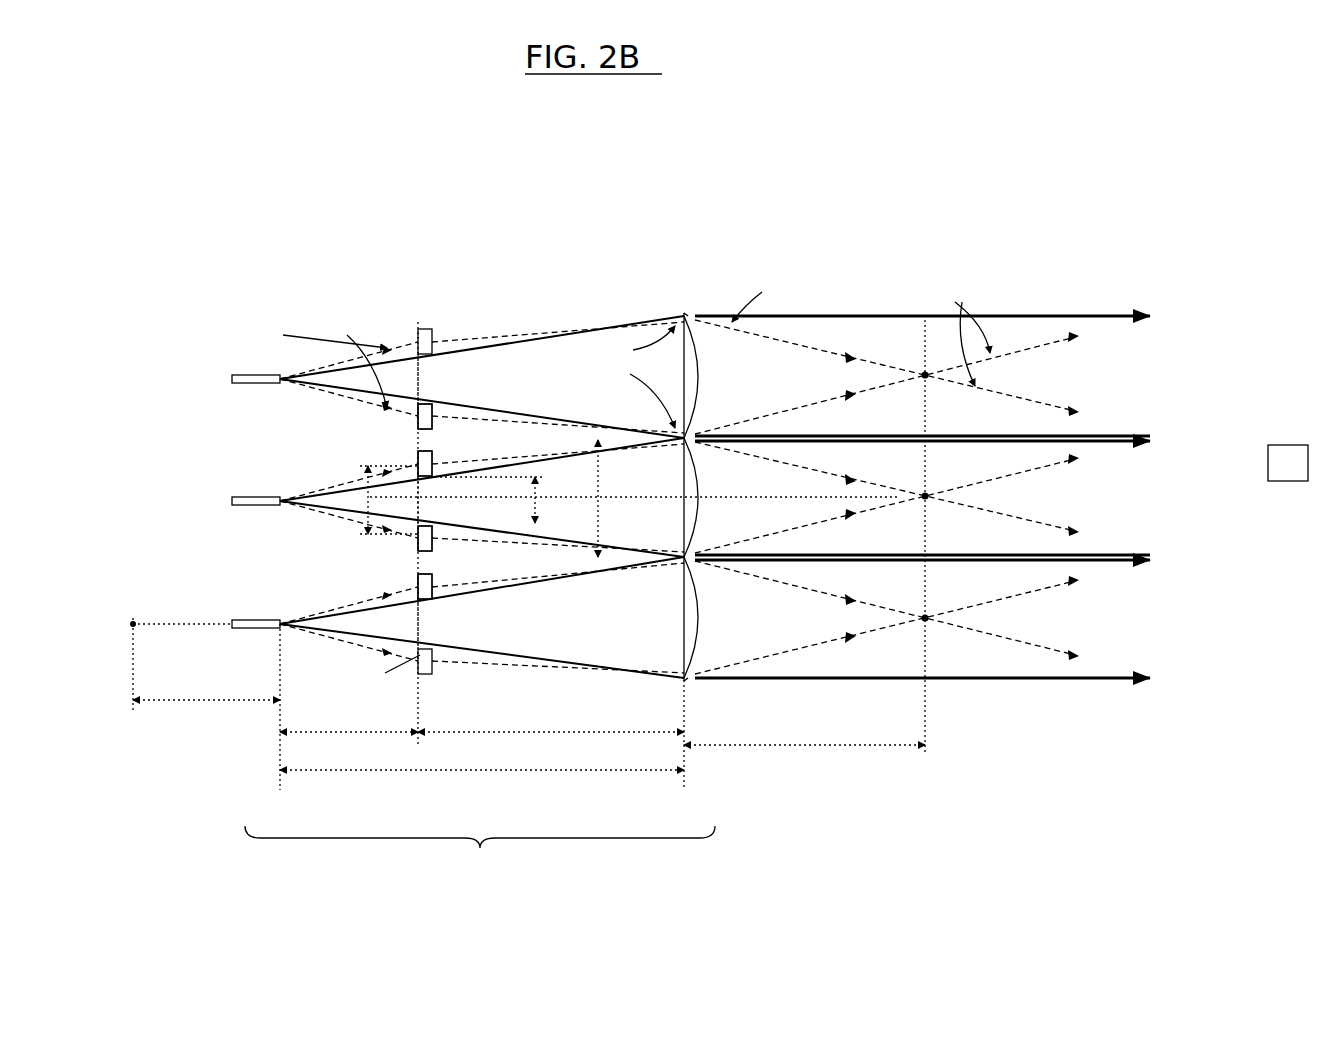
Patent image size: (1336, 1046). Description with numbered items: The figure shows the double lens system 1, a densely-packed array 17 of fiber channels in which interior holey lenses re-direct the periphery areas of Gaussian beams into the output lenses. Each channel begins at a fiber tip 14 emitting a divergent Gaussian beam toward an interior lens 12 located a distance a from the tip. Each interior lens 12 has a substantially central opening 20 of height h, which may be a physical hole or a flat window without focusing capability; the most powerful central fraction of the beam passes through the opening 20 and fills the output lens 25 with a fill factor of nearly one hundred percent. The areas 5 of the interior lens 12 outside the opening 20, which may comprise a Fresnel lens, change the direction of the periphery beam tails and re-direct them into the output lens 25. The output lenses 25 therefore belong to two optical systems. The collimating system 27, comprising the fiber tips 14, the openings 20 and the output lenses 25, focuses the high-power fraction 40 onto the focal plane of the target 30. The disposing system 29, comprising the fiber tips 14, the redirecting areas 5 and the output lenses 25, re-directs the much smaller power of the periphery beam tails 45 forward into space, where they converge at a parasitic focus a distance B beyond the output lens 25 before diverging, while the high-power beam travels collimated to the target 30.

The double lens system 1 is at (197, 170).
The fiber tip 14 is at (277, 375).
The disposing system 29 is at (438, 465).
The redirecting areas 5 is at (434, 335).
The opening 20 is at (442, 382).
The interior lens 12 is at (416, 418).
The collimating system 27 is at (659, 433).
The output lens 25 is at (711, 483).
The high-power fraction 40 is at (1190, 313).
The periphery beam tails 45 is at (1025, 378).
The target 30 is at (1299, 474).
The densely-packed array 17 is at (480, 854).